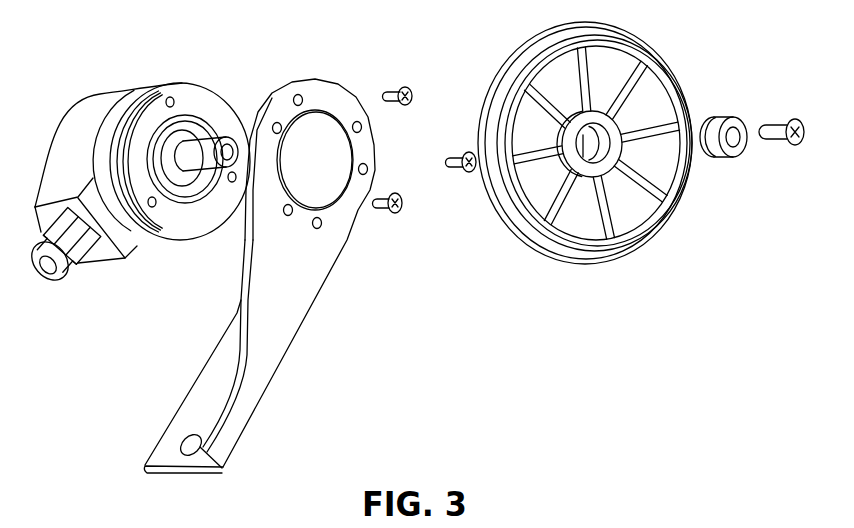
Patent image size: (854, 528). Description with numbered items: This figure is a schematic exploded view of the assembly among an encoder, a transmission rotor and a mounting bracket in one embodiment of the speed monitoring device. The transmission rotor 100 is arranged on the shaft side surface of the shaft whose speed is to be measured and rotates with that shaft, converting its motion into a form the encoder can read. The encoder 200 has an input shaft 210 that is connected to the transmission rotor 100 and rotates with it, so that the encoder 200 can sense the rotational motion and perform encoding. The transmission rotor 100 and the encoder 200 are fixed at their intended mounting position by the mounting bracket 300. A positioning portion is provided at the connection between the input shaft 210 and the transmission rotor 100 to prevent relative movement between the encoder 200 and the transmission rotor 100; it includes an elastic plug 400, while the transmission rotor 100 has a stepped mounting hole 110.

The transmission rotor 100 is at (587, 250).
The stepped mounting hole 110 is at (600, 133).
The encoder 200 is at (142, 175).
The input shaft 210 is at (198, 158).
The mounting bracket 300 is at (272, 315).
The elastic plug 400 is at (718, 125).